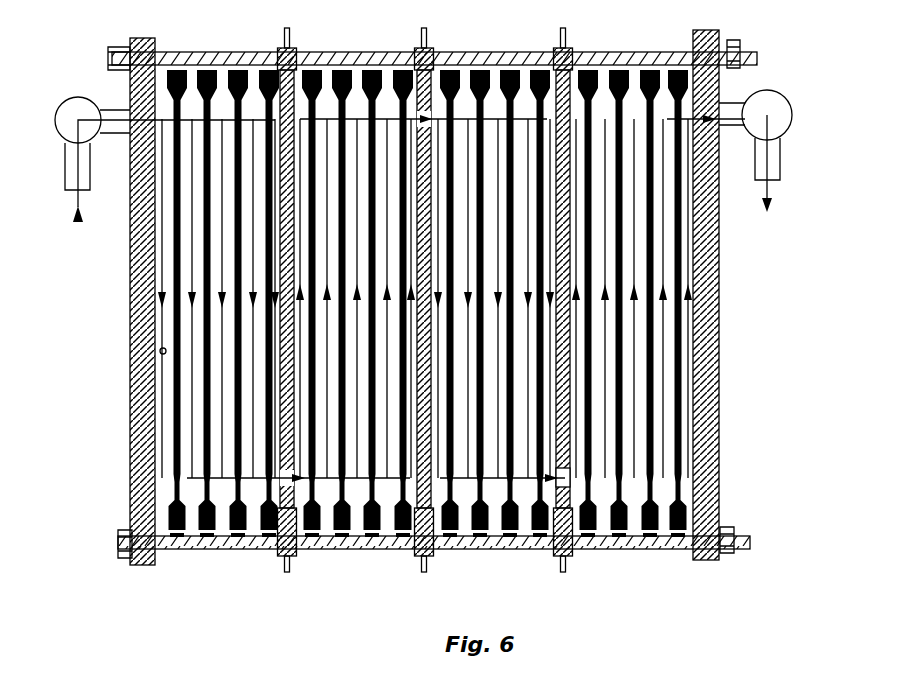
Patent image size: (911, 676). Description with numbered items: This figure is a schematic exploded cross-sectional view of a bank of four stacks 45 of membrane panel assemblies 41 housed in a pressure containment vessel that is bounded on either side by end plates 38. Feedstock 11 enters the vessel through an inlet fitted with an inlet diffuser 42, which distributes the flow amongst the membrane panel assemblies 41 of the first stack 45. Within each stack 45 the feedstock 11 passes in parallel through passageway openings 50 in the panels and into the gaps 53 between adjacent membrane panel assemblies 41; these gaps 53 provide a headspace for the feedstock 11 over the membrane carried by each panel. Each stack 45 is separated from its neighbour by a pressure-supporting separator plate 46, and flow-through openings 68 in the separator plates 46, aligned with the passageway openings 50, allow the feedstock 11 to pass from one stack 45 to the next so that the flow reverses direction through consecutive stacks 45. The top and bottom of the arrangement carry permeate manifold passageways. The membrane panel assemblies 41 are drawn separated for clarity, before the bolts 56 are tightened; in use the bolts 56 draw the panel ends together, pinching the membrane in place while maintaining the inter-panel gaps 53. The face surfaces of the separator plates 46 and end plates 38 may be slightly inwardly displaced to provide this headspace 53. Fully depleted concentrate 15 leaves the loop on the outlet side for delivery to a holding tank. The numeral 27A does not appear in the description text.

The feedstock 11 is at (755, 260).
The concentrate 15 is at (755, 167).
The tubes 27A is at (371, 312).
The end plates 38 is at (130, 298).
The membrane panel assemblies 41 is at (175, 381).
The inlet diffuser 42 is at (70, 118).
The stacks 45 is at (221, 405).
The separator plate 46 is at (429, 318).
The passageway openings 50 is at (187, 481).
The gaps 53 is at (159, 352).
The bolts 56 is at (222, 53).
The flow-through openings 68 is at (592, 525).